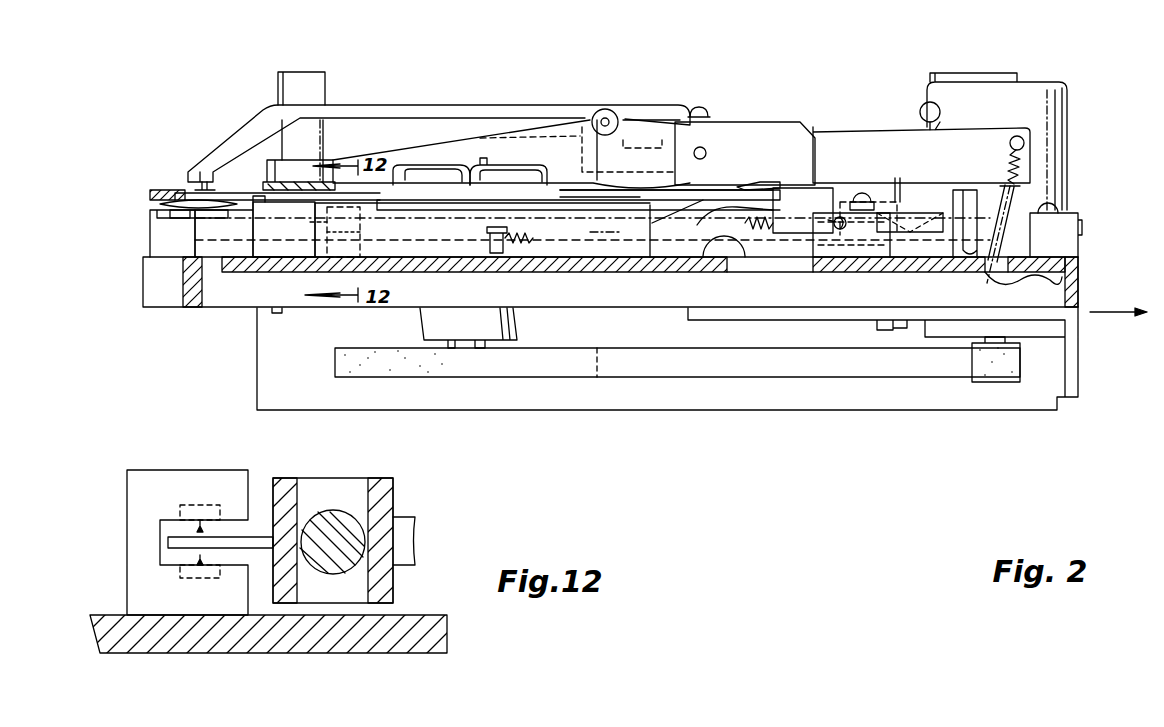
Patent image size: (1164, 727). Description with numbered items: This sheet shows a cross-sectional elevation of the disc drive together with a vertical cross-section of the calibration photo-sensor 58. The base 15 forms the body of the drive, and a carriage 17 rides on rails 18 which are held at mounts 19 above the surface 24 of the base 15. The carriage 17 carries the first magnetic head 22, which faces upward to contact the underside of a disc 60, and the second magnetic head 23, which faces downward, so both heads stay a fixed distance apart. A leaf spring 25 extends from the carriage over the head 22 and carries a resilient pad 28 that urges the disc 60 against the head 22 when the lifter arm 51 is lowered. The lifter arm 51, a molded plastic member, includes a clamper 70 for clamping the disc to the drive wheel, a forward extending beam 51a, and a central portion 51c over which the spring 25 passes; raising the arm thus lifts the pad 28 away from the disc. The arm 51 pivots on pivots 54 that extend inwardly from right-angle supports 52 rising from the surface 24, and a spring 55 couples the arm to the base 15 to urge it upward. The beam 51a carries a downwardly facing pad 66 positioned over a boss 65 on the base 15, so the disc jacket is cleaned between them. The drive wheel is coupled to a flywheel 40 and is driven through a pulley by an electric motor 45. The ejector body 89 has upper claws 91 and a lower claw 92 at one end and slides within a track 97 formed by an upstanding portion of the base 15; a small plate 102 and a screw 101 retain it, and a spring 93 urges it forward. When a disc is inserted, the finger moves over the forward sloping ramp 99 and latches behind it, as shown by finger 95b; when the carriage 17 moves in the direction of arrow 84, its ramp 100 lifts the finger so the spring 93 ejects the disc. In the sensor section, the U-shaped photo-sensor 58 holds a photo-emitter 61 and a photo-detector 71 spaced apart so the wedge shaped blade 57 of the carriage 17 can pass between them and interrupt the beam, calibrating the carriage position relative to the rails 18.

In FIG. 2, the base 15 is at (1073, 286).
In FIG. 2, the carriage 17 is at (441, 232).
In FIG. 12, the carriage 17 is at (272, 490).
In FIG. 2, the rails 18 is at (1022, 213).
In FIG. 12, the rails 18 is at (332, 512).
In FIG. 2, the mounts 19 is at (158, 228).
In FIG. 2, the first magnetic head 22 is at (172, 202).
In FIG. 2, the second magnetic head 23 is at (662, 190).
In FIG. 2, the surface 24 is at (392, 228).
In FIG. 2, the leaf spring 25 is at (467, 110).
In FIG. 2, the resilient pad 28 is at (197, 190).
In FIG. 2, the flywheel 40 is at (562, 356).
In FIG. 2, the electric motor 45 is at (1060, 93).
In FIG. 2, the lifter arm 51 is at (640, 118).
In FIG. 2, the forward extending beam 51a is at (330, 158).
In FIG. 2, the portion of the arm 51c is at (497, 131).
In FIG. 2, the supports 52 is at (770, 135).
In FIG. 2, the pivots 54 is at (705, 150).
In FIG. 2, the spring 55 is at (1015, 188).
In FIG. 2, the wedge shaped blade 57 is at (312, 225).
In FIG. 12, the wedge shaped blade 57 is at (222, 538).
In FIG. 12, the calibration photo-sensor 58 is at (118, 517).
In FIG. 2, the disc 60 is at (150, 192).
In FIG. 12, the photo-emitter 61 is at (185, 505).
In FIG. 2, the boss 65 is at (284, 229).
In FIG. 2, the pad 66 is at (260, 177).
In FIG. 2, the clamper 70 is at (407, 177).
In FIG. 12, the photo-detector 71 is at (178, 572).
In FIG. 2, the arrow 84 is at (1118, 326).
In FIG. 2, the ejector body 89 is at (800, 178).
In FIG. 2, the upper claws 91 is at (750, 182).
In FIG. 2, the lower claw 92 is at (705, 214).
In FIG. 2, the spring 93 is at (517, 243).
In FIG. 2, the finger 95b is at (978, 193).
In FIG. 2, the track 97 is at (848, 236).
In FIG. 2, the forward sloping ramp 99 is at (945, 248).
In FIG. 2, the ramp 100 is at (917, 212).
In FIG. 2, the screw 101 is at (865, 197).
In FIG. 2, the small plate 102 is at (840, 203).